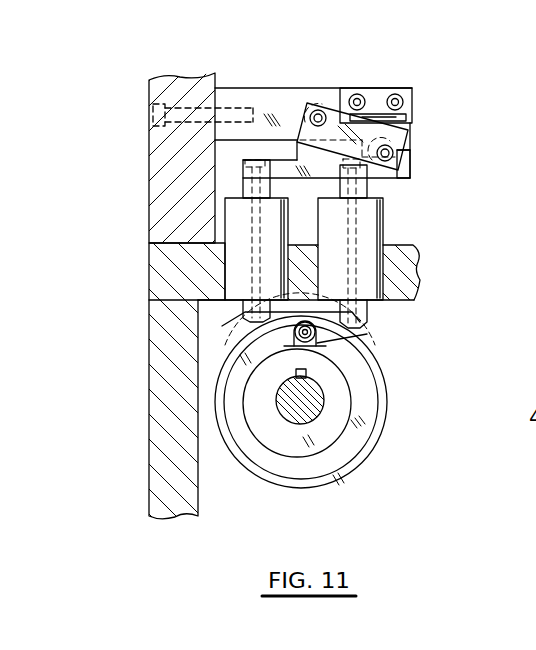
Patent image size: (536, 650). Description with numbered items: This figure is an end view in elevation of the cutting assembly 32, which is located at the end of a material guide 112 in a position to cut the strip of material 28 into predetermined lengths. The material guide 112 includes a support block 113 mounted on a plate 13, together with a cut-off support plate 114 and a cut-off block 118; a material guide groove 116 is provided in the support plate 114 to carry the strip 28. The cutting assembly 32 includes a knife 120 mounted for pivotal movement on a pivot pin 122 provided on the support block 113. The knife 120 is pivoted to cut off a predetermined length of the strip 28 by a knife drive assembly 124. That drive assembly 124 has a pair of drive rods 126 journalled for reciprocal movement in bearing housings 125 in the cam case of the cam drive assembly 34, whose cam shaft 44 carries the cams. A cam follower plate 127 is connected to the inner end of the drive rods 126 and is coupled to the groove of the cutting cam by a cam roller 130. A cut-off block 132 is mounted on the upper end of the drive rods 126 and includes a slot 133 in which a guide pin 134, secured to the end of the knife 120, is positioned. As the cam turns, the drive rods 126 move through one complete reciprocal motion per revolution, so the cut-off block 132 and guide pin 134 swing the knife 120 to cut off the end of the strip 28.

The plate 13 is at (172, 86).
The cam drive assembly 34 is at (138, 316).
The material guide 112 is at (288, 76).
The support block 113 is at (245, 92).
The cut-off block 118 is at (372, 88).
The material guide groove 116 is at (380, 118).
The pivot pin 122 is at (308, 115).
The strip of material 28 is at (396, 107).
The cut-off support plate 114 is at (412, 122).
The cutting assembly 32 is at (462, 132).
The knife 120 is at (408, 129).
The slot 133 is at (412, 169).
The cut-off block 132 is at (410, 178).
The guide pin 134 is at (383, 163).
The drive rods 126 is at (338, 190).
The knife drive assembly 124 is at (412, 234).
The bearing housings 125 is at (367, 275).
The cam follower plate 127 is at (367, 325).
The cam roller 130 is at (376, 349).
The cam shaft 44 is at (315, 403).